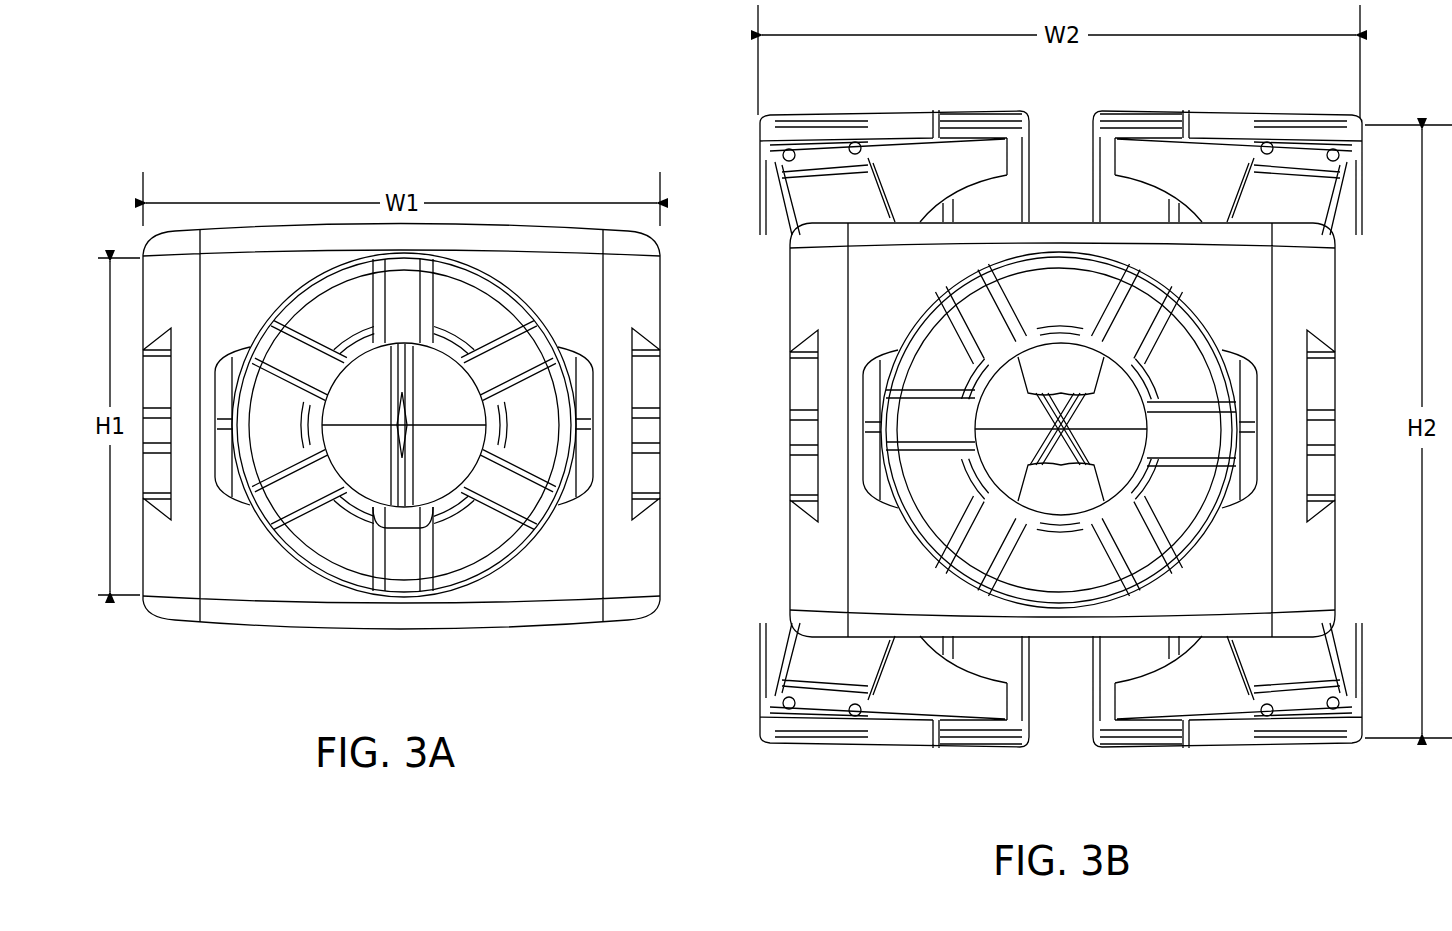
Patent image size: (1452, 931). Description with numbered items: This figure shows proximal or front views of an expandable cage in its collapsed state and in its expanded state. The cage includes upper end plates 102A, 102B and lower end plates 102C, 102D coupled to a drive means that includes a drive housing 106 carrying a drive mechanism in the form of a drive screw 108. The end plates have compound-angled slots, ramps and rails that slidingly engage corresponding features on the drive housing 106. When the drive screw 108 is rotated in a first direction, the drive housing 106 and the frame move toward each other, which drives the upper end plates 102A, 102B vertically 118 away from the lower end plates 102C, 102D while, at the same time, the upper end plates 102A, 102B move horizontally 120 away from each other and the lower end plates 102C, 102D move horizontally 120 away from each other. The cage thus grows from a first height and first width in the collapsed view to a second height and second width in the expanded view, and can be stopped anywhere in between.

In FIG. 3B, the upper end plate 102A is at (850, 115).
In FIG. 3B, the upper end plate 102B is at (1130, 115).
In FIG. 3B, the lower end plate 102C is at (788, 730).
In FIG. 3B, the lower end plate 102D is at (1335, 740).
In FIG. 3A, the drive housing 106 is at (298, 624).
In FIG. 3B, the drive housing 106 is at (1036, 640).
In FIG. 3A, the drive screw 108 is at (440, 566).
In FIG. 3B, the drive screw 108 is at (1060, 582).
In FIG. 3B, the vertical direction 118 is at (890, 70).
In FIG. 3B, the horizontal direction 120 is at (755, 156).